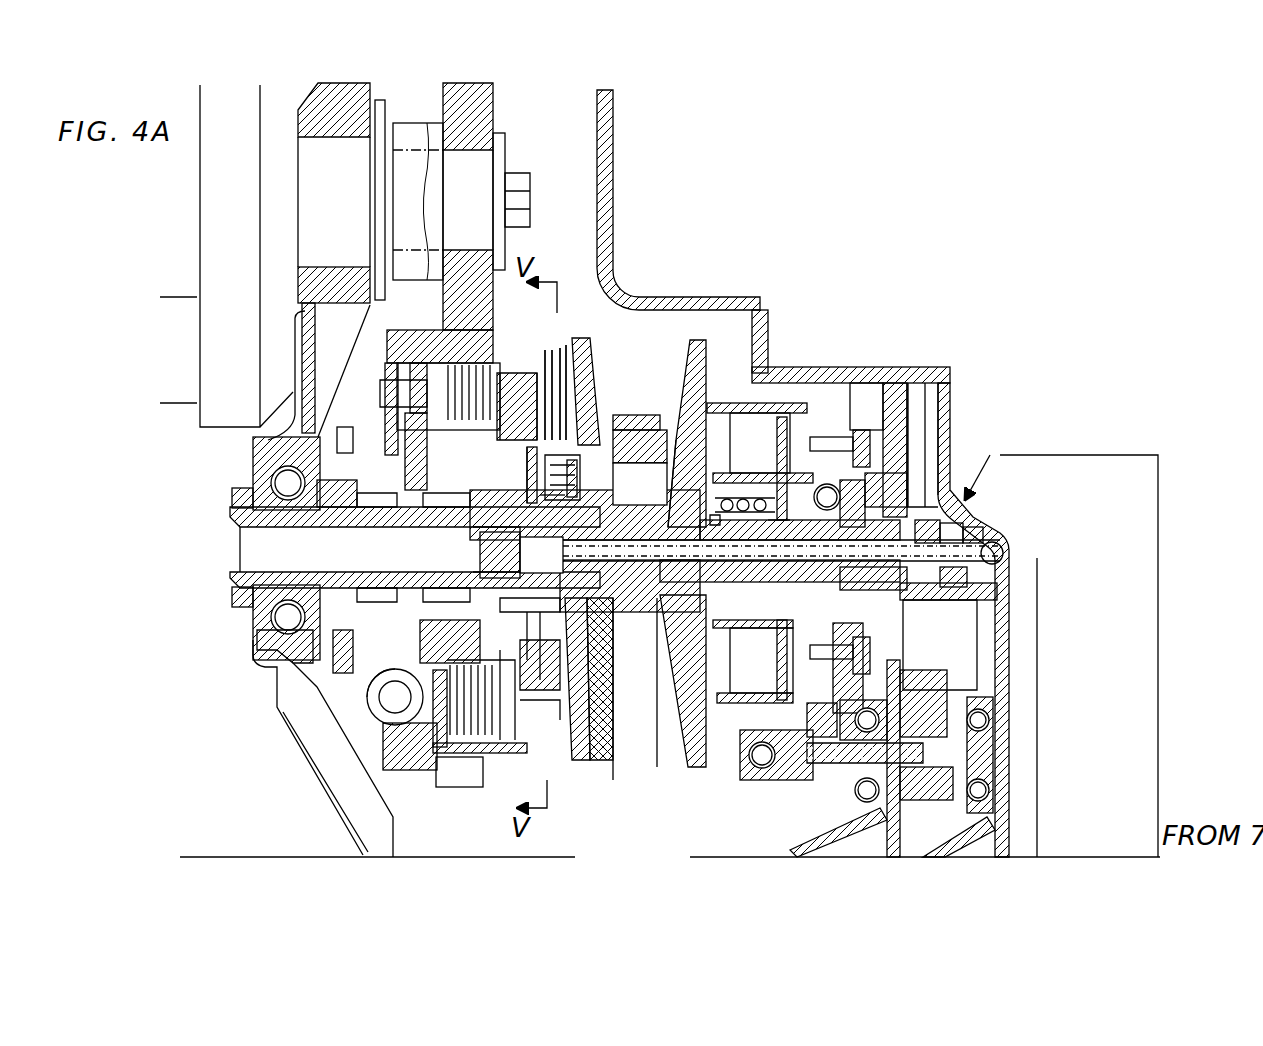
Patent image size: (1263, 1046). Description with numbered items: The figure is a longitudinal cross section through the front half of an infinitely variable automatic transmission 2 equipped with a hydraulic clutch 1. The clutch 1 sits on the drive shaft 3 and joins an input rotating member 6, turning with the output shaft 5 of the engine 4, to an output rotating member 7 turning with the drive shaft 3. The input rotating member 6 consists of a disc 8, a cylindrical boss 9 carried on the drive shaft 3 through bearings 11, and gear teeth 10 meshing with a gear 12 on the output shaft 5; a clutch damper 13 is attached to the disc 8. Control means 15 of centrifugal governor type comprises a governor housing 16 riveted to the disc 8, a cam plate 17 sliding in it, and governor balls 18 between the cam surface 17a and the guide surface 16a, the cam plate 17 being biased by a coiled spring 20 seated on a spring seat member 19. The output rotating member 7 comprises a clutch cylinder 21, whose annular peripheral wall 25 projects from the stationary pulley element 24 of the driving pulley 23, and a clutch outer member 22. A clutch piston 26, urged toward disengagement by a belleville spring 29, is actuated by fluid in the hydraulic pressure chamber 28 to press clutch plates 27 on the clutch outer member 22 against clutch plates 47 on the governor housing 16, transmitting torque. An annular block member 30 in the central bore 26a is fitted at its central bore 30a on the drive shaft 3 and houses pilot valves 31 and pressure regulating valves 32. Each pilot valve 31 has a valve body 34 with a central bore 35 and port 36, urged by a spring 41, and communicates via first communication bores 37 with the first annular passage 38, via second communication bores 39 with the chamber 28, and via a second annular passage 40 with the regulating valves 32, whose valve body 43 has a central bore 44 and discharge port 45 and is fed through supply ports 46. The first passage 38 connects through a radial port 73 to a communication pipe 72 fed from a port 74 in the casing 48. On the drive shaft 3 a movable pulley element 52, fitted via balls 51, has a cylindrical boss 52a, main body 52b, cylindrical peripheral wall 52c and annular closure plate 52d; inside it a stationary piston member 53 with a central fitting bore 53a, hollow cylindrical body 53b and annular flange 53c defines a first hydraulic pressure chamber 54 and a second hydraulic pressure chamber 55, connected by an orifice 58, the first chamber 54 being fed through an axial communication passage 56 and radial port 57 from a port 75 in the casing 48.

The hydraulic clutch 1 is at (565, 247).
The automatic transmission 2 is at (752, 297).
The drive shaft 3 is at (232, 550).
The internal combustion engine 4 is at (220, 418).
The output shaft 5 is at (485, 163).
The input rotating member 6 is at (387, 345).
The output rotating member 7 is at (590, 347).
The disc 8 is at (382, 415).
The cylindrical boss 9 is at (320, 477).
The gear teeth 10 is at (453, 317).
The bearings 11 is at (385, 515).
The gear 12 is at (495, 85).
The clutch damper 13 is at (360, 677).
The control means 15 is at (430, 763).
The governor housing 16 is at (373, 713).
The guide surface 16a is at (365, 680).
The cam plate 17 is at (533, 357).
The cam surface 17a is at (473, 730).
The governor balls 18 is at (320, 727).
The spring seat member 19 is at (605, 720).
The coiled spring 20 is at (570, 753).
The clutch cylinder 21 is at (597, 350).
The clutch outer member 22 is at (480, 353).
The driving pulley 23 is at (590, 333).
The stationary pulley element 24 is at (575, 405).
The annular peripheral wall 25 is at (548, 395).
The clutch piston 26 is at (557, 425).
The central bore 26a is at (580, 470).
The clutch plates 27 is at (493, 353).
The hydraulic pressure chamber 28 is at (540, 460).
The belleville spring 29 is at (515, 480).
The annular block member 30 is at (517, 547).
The central bore 30a is at (493, 517).
The pilot valves 31 is at (637, 490).
The pressure regulating valves 32 is at (557, 660).
The valve body 34 is at (477, 527).
The central bore 35 is at (427, 520).
The port 36 is at (640, 467).
The first communication bores 37 is at (548, 498).
The first annular passage 38 is at (521, 555).
The second communication bores 39 is at (560, 478).
The second annular passage 40 is at (560, 687).
The spring 41 is at (640, 492).
The valve body 43 is at (533, 673).
The central bore 44 is at (540, 703).
The discharge port 45 is at (467, 660).
The supply ports 46 is at (557, 633).
The clutch plates 47 is at (443, 330).
The casing 48 is at (840, 400).
The balls 51 is at (745, 512).
The movable pulley element 52 is at (712, 348).
The cylindrical boss 52a is at (693, 373).
The main body 52b is at (705, 365).
The cylindrical peripheral wall 52c is at (790, 410).
The annular closure plate 52d is at (820, 410).
The stationary piston member 53 is at (900, 432).
The central fitting bore 53a is at (907, 450).
The hollow cylindrical body 53b is at (907, 430).
The annular flange 53c is at (718, 512).
The first hydraulic pressure chamber 54 is at (703, 680).
The second hydraulic pressure chamber 55 is at (753, 683).
The axial communication passage 56 is at (755, 661).
The radial port 57 is at (762, 523).
The orifice 58 is at (778, 468).
The communication pipe 72 is at (610, 553).
The radial port 73 is at (568, 598).
The port 74 is at (1018, 550).
The port 75 is at (963, 518).